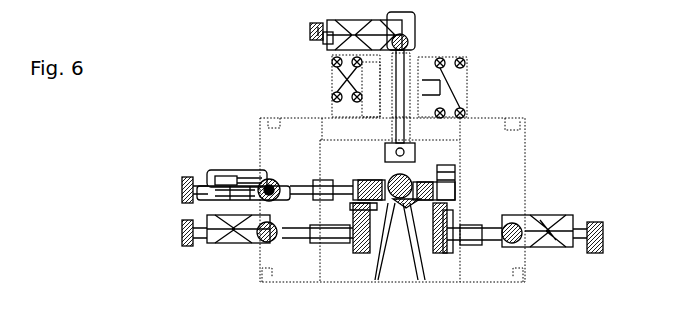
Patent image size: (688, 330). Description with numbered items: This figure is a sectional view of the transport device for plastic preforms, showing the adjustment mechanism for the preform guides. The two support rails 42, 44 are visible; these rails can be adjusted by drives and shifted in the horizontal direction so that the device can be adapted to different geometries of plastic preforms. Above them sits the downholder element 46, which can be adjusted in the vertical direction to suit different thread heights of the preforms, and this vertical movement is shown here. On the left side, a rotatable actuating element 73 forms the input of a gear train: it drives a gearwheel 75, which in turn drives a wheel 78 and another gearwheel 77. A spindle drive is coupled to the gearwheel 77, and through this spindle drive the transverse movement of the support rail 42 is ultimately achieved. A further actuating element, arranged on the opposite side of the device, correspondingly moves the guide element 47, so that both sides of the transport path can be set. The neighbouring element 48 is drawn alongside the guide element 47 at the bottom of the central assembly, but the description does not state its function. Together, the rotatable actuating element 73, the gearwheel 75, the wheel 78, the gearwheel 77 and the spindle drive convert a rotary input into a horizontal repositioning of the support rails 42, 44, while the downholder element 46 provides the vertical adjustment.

The support rail 42 is at (397, 180).
The support rail 44 is at (417, 180).
The downholder element 46 is at (397, 157).
The guide element 47 is at (377, 280).
The second leg 48 is at (425, 280).
The rotatable actuating element 73 is at (188, 185).
The gearwheel 75 is at (266, 189).
The gearwheel 77 is at (281, 186).
The wheel 78 is at (270, 187).